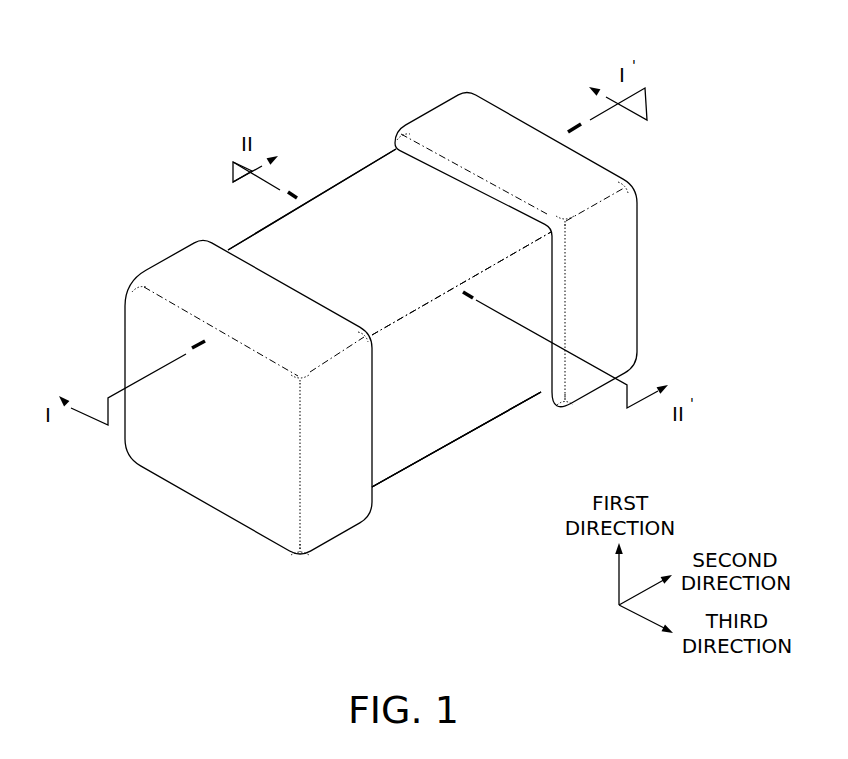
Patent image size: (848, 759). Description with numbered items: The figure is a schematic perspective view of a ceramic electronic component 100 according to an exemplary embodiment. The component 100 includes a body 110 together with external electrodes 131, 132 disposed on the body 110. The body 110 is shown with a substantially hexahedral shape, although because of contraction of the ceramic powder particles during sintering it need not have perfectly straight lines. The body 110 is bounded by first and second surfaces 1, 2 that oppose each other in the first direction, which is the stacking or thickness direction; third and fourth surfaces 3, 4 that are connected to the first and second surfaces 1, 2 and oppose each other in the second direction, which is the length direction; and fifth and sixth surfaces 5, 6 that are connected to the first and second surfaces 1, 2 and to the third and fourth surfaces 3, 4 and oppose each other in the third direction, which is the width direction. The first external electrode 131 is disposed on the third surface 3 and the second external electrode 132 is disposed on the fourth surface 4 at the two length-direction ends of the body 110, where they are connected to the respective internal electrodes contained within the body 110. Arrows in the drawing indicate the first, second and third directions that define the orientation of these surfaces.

The ceramic electronic component 100 is at (128, 56).
The body 110 is at (260, 257).
The first external electrode 131 is at (183, 268).
The second external electrode 132 is at (441, 124).
The first surface 1 is at (424, 414).
The second surface 2 is at (398, 200).
The third surface 3 is at (216, 458).
The fourth surface 4 is at (589, 262).
The fifth surface 5 is at (340, 222).
The sixth surface 6 is at (484, 383).